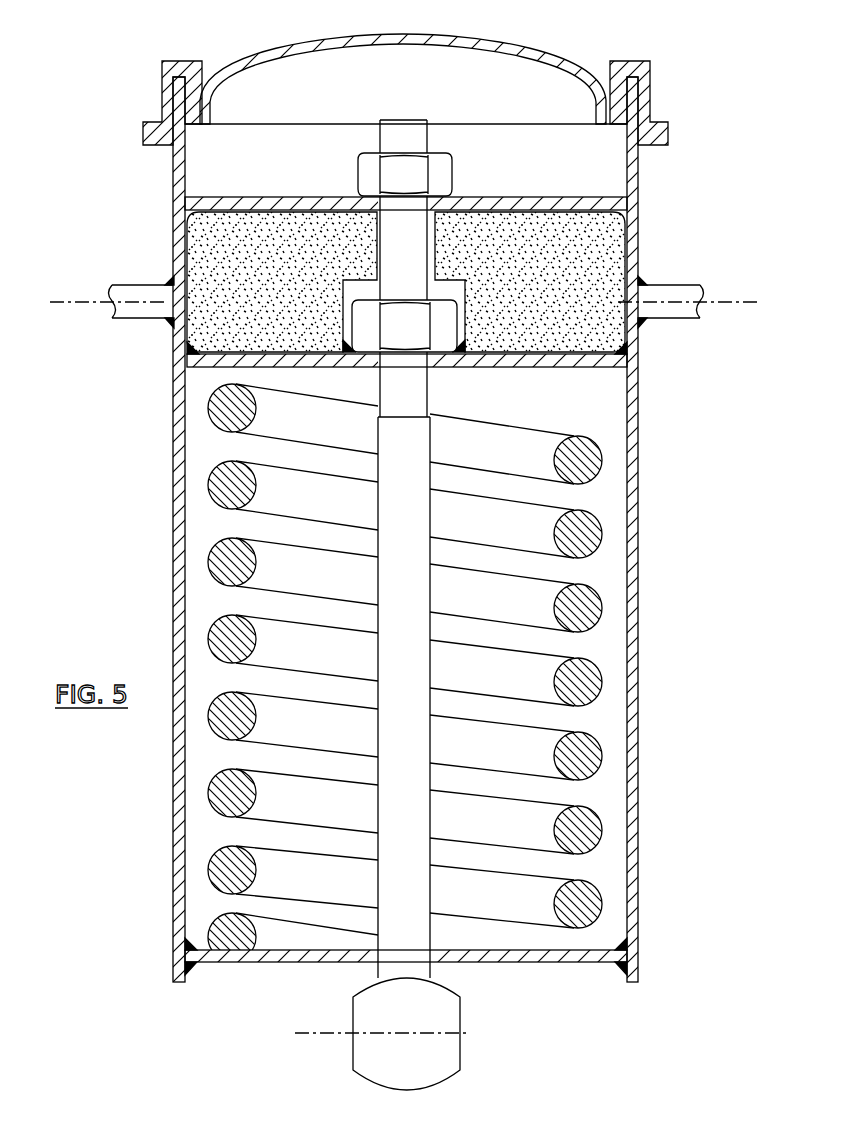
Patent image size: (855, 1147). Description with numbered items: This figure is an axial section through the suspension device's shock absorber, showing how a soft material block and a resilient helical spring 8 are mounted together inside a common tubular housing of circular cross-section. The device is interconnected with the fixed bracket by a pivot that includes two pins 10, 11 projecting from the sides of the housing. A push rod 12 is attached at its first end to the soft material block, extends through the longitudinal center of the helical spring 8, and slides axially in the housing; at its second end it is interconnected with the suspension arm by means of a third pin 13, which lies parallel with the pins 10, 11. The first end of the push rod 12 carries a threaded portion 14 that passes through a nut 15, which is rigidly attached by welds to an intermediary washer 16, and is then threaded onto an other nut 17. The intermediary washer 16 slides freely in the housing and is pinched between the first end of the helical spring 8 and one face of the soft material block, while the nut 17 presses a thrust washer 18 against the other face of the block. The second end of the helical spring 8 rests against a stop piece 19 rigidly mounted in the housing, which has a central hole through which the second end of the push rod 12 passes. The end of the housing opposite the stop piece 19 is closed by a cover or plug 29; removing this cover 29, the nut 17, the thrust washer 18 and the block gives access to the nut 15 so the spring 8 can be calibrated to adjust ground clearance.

The helical spring 8 is at (503, 759).
The pin 10 is at (119, 291).
The pin 11 is at (688, 290).
The push rod 12 is at (415, 632).
The third pin 13 is at (323, 1032).
The threaded portion 14 is at (412, 251).
The nut 15 is at (413, 337).
The intermediary washer 16 is at (551, 368).
The nut 17 is at (414, 186).
The thrust washer 18 is at (528, 197).
The stop piece 19 is at (528, 962).
The cover or plug 29 is at (510, 45).